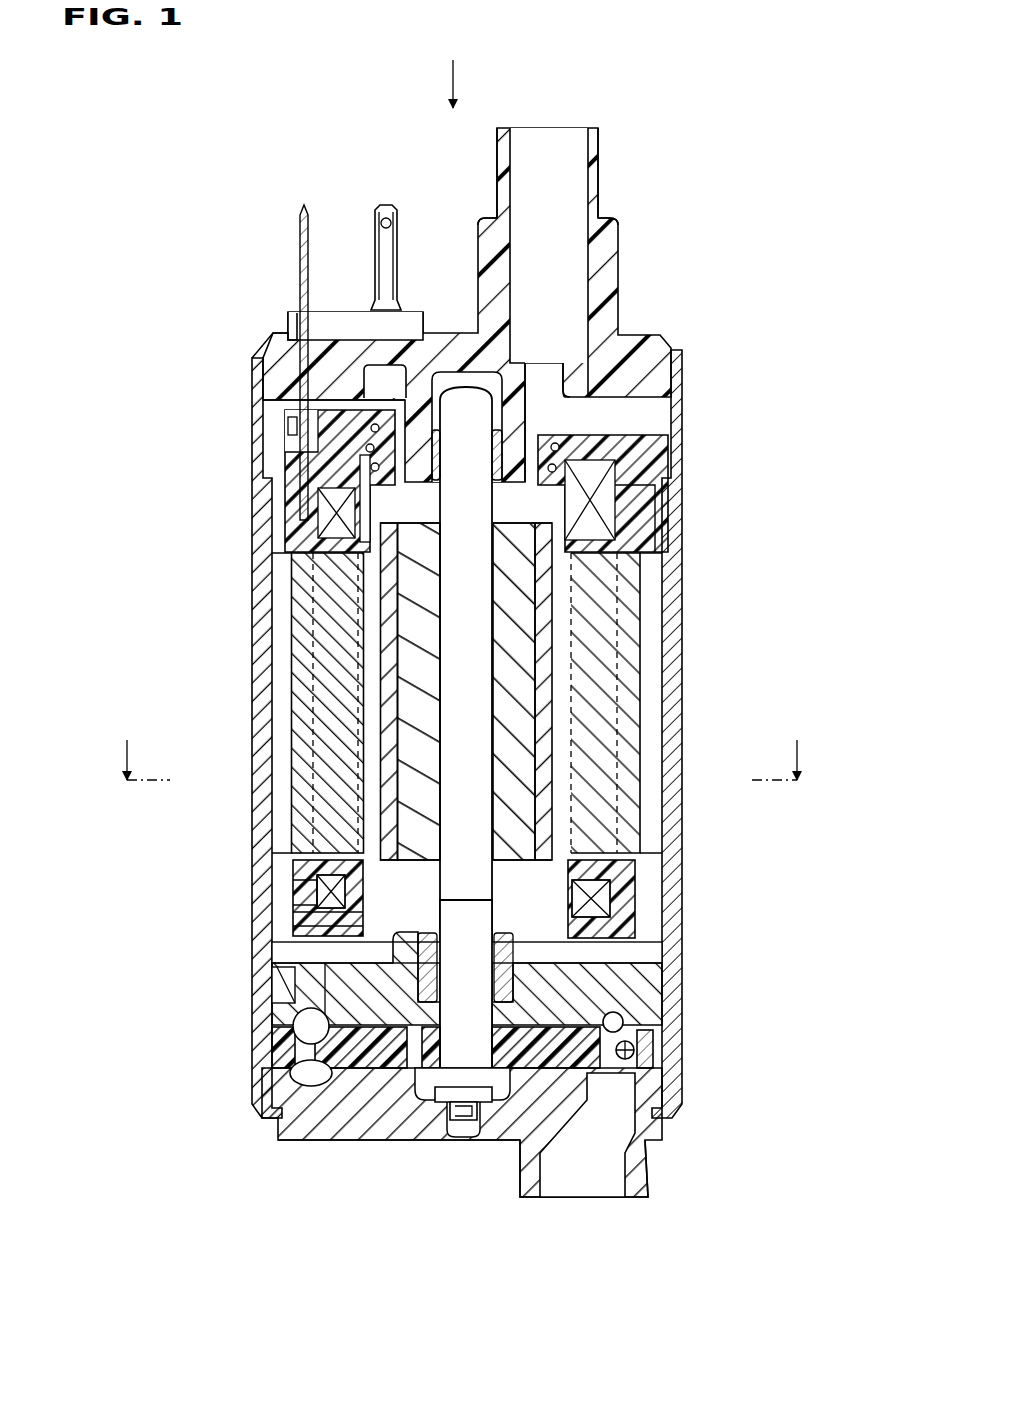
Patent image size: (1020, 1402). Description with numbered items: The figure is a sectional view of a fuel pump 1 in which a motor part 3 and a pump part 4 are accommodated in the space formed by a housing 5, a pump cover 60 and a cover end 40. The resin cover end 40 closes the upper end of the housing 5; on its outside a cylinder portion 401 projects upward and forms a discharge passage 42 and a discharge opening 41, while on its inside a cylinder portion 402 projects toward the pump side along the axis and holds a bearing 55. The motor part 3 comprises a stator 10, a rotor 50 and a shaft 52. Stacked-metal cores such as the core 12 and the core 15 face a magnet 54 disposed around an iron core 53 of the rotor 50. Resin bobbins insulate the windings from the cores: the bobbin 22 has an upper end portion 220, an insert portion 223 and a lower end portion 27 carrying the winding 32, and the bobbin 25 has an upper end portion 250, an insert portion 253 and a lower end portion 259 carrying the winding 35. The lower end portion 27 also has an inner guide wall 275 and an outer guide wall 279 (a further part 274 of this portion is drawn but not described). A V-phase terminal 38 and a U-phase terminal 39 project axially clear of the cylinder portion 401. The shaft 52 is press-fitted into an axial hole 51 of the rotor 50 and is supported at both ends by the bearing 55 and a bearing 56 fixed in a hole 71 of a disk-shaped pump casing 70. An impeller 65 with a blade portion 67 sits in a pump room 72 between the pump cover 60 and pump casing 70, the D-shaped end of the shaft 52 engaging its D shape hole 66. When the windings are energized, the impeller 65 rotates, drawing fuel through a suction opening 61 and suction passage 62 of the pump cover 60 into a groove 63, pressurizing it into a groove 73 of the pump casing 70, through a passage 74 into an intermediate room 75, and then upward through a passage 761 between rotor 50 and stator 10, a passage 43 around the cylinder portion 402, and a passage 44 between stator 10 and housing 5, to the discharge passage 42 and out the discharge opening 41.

The fuel pump 1 is at (232, 128).
The motor part 3 is at (160, 615).
The pump part 4 is at (210, 1095).
The housing 5 is at (300, 818).
The stator 10 is at (648, 625).
The core 12 is at (330, 655).
The core 15 is at (610, 705).
The bobbin 22 is at (285, 518).
The bobbin 25 is at (640, 490).
The lower end portion 27 is at (300, 862).
The winding 32 is at (310, 880).
The winding 35 is at (590, 903).
The V-phase terminal 38 is at (300, 213).
The U-phase terminal 39 is at (385, 208).
The cover end 40 is at (345, 350).
The discharge opening 41 is at (562, 128).
The discharge passage 42 is at (560, 278).
The passage 43 is at (530, 420).
The passage 44 is at (283, 592).
The rotor 50 is at (380, 713).
The axial hole 51 is at (440, 752).
The shaft 52 is at (455, 795).
The iron core 53 is at (520, 745).
The magnet 54 is at (548, 832).
The bearing 55 is at (348, 520).
The bearing 56 is at (600, 985).
The pump cover 60 is at (352, 1130).
The suction opening 61 is at (577, 1197).
The suction passage 62 is at (617, 1115).
The groove 63 is at (308, 1082).
The impeller 65 is at (648, 1042).
The D shape hole 66 is at (470, 1090).
The blade portion 67 is at (620, 1028).
The pump casing 70 is at (385, 1062).
The hole 71 is at (398, 963).
The pump room 72 is at (262, 1057).
The groove 73 is at (312, 1015).
The passage 74 is at (308, 983).
The intermediate room 75 is at (598, 947).
The upper end portion 220 is at (290, 496).
The insert portion 223 is at (318, 625).
The upper end portion 250 is at (640, 520).
The insert portion 253 is at (608, 737).
The lower end portion 259 is at (590, 875).
The plate 274 is at (300, 910).
The inner guide wall 275 is at (300, 925).
The outer guide wall 279 is at (295, 897).
The cylinder portion 401 is at (612, 232).
The cylinder portion 402 is at (430, 385).
The passage 761 is at (563, 650).